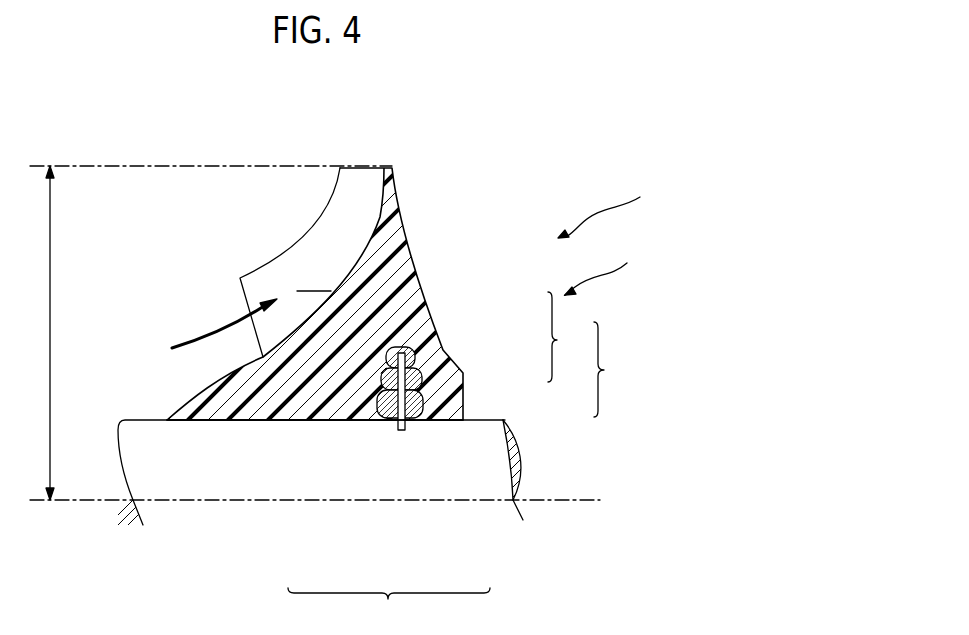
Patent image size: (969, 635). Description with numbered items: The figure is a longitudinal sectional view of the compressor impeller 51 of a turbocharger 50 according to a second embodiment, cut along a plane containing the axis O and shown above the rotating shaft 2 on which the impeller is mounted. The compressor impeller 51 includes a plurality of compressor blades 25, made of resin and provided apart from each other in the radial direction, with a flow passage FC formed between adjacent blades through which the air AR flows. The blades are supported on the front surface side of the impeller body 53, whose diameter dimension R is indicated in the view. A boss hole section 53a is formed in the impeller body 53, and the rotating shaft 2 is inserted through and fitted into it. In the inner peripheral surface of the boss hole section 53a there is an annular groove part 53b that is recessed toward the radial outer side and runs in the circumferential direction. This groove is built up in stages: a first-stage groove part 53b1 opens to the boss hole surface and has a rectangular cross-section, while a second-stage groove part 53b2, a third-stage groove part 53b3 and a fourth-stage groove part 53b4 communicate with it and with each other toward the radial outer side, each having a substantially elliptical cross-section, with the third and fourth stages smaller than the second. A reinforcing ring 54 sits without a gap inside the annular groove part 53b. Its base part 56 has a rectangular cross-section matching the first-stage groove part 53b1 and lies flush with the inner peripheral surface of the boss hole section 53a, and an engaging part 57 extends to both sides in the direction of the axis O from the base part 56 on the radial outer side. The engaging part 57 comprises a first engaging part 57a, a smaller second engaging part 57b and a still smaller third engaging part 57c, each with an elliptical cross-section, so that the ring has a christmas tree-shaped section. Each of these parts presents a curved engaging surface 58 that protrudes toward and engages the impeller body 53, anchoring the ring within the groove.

The rotating shaft 2 is at (490, 453).
The compressor blade 25 is at (327, 220).
The turbocharger 50 is at (611, 203).
The compressor impeller 51 is at (605, 263).
The impeller body 53 is at (400, 268).
The boss hole section 53a is at (238, 425).
The annular groove part 53b is at (389, 611).
The first-stage groove part 53b1 is at (395, 421).
The second-stage groove part 53b2 is at (383, 421).
The third-stage groove part 53b3 is at (400, 421).
The fourth-stage groove part 53b4 is at (405, 421).
The reinforcing ring 54 is at (616, 369).
The base part 56 is at (413, 412).
The engaging part 57 is at (568, 337).
The first engaging part 57a is at (415, 398).
The second engaging part 57b is at (410, 378).
The third engaging part 57c is at (410, 355).
The curved engaging surface 58 is at (408, 350).
The diameter dimension R is at (39, 333).
The axis O is at (575, 500).
The air AR is at (192, 345).
The flow passage FC is at (314, 277).